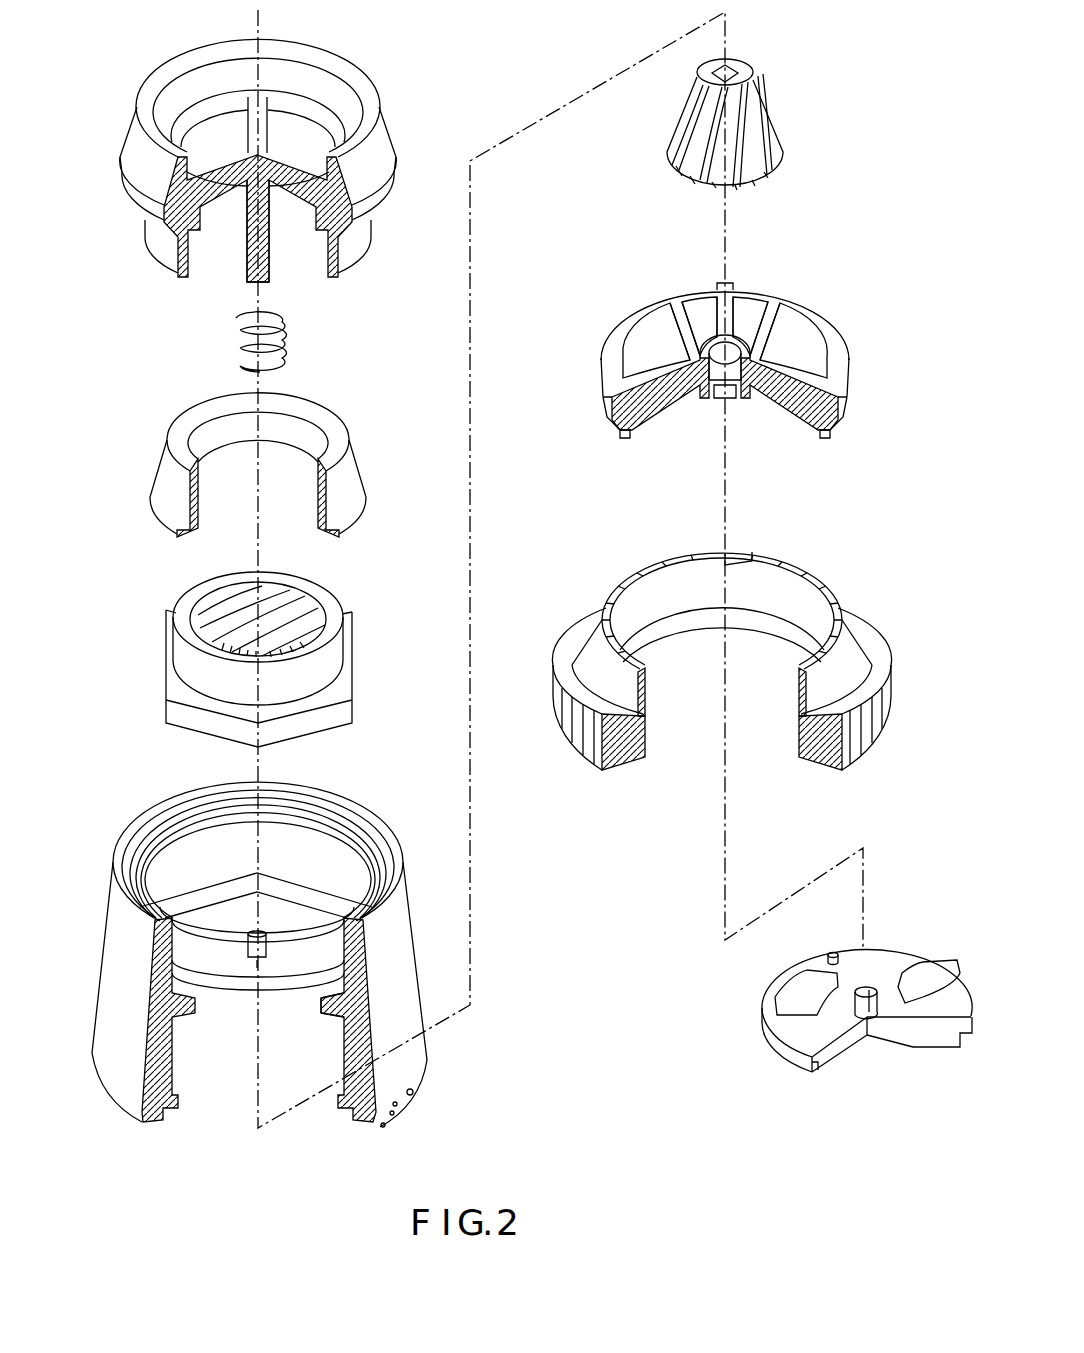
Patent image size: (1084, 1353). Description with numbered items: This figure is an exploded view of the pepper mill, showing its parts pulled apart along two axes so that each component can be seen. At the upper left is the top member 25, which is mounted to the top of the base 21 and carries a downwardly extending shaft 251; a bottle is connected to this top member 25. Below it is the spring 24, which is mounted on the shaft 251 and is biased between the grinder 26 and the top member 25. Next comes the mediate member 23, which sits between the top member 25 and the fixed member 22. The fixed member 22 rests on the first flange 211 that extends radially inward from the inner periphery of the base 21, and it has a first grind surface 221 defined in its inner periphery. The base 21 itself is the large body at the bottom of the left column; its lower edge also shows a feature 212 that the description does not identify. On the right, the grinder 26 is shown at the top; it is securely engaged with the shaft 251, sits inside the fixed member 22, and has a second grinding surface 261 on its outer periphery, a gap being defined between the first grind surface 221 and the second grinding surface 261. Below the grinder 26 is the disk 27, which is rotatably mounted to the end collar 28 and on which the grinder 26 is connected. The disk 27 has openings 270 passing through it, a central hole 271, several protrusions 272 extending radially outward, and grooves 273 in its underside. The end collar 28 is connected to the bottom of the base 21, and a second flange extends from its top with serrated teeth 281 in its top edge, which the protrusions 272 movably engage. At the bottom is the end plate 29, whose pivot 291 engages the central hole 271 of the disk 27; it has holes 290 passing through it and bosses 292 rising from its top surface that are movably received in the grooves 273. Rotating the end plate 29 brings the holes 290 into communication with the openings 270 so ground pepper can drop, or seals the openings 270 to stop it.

The base 21 is at (273, 963).
The first flange 211 is at (325, 1010).
The holes in body 212 is at (409, 1106).
The fixed member 22 is at (252, 654).
The first grind surface 221 is at (313, 613).
The mediate member 23 is at (162, 465).
The spring 24 is at (240, 349).
The top member 25 is at (138, 137).
The shaft 251 is at (268, 256).
The grinder 26 is at (722, 140).
The second grinding surface 261 is at (688, 147).
The disk 27 is at (691, 377).
The openings 270 is at (638, 353).
The central hole 271 is at (727, 403).
The protrusions 272 is at (608, 407).
The grooves 273 is at (630, 440).
The end collar 28 is at (721, 661).
The serrated teeth 281 is at (638, 672).
The end plate 29 is at (825, 999).
The holes 290 is at (803, 993).
The pivot 291 is at (878, 998).
The bosses 292 is at (828, 955).